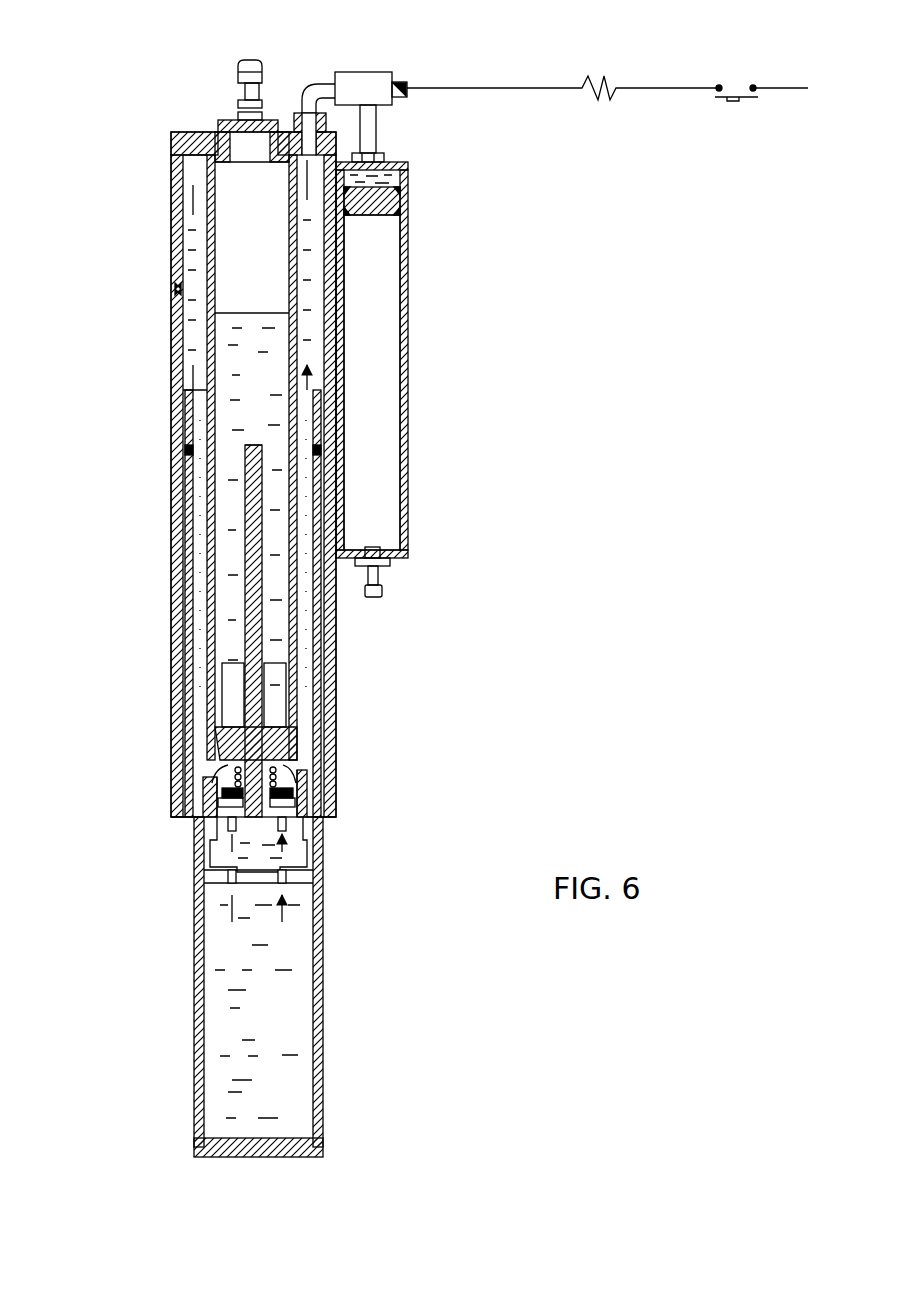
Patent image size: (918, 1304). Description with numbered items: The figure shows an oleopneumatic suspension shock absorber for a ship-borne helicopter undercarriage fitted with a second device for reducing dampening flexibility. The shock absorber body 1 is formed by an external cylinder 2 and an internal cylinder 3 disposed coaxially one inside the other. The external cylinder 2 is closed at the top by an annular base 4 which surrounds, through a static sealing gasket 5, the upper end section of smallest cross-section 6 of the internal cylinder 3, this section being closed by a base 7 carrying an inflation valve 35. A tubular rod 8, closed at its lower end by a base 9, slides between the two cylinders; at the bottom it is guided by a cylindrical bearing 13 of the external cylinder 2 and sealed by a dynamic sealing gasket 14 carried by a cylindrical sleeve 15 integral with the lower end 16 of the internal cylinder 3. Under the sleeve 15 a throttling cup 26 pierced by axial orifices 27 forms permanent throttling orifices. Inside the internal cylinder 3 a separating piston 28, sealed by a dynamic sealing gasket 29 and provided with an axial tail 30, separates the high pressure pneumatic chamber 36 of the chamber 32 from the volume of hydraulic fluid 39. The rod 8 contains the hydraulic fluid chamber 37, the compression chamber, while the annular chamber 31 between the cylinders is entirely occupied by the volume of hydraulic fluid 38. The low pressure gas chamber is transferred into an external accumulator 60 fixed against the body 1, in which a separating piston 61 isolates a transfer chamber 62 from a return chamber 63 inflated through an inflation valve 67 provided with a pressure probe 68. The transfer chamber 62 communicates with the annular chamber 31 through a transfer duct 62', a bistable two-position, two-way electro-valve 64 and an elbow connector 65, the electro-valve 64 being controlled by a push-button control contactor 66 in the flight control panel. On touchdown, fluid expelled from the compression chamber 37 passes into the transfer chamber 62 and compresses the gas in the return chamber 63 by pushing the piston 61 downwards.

The body 1 is at (153, 240).
The external cylinder 2 is at (177, 203).
The internal cylinder 3 is at (210, 345).
The annular base 4 is at (197, 137).
The static sealing gasket 5 is at (207, 140).
The upper end section of smallest cross-section 6 is at (232, 118).
The base 7 is at (275, 120).
The rod 8 is at (318, 1000).
The base 9 is at (262, 1157).
The cylindrical bearing 13 is at (327, 805).
The dynamic sealing gasket 14 is at (308, 790).
The cylindrical sleeve 15 is at (307, 833).
The lower end 16 is at (303, 750).
The throttling cup 26 is at (317, 880).
The axial orifices 27 is at (230, 883).
The separating piston 28 is at (240, 750).
The dynamic sealing gasket 29 is at (210, 737).
The axial tail 30 is at (255, 607).
The annular chamber 31 is at (193, 180).
The chamber 32 is at (233, 523).
The inflation valve 35 is at (248, 63).
The high pressure pneumatic chamber 36 is at (250, 297).
The hydraulic fluid chamber 37 is at (230, 1025).
The volume of hydraulic fluid 38 is at (205, 558).
The volume of hydraulic fluid 39 is at (233, 632).
The external accumulator 60 is at (410, 355).
The separating piston 61 is at (378, 212).
The transfer chamber 62 is at (412, 168).
The transfer duct 62' is at (407, 132).
The return chamber 63 is at (380, 278).
The bistable electro-valve 64 is at (368, 72).
The elbow connector 65 is at (320, 85).
The push-button control contactor 66 is at (717, 97).
The inflation valve 67 is at (378, 575).
The pressure probe 68 is at (382, 597).